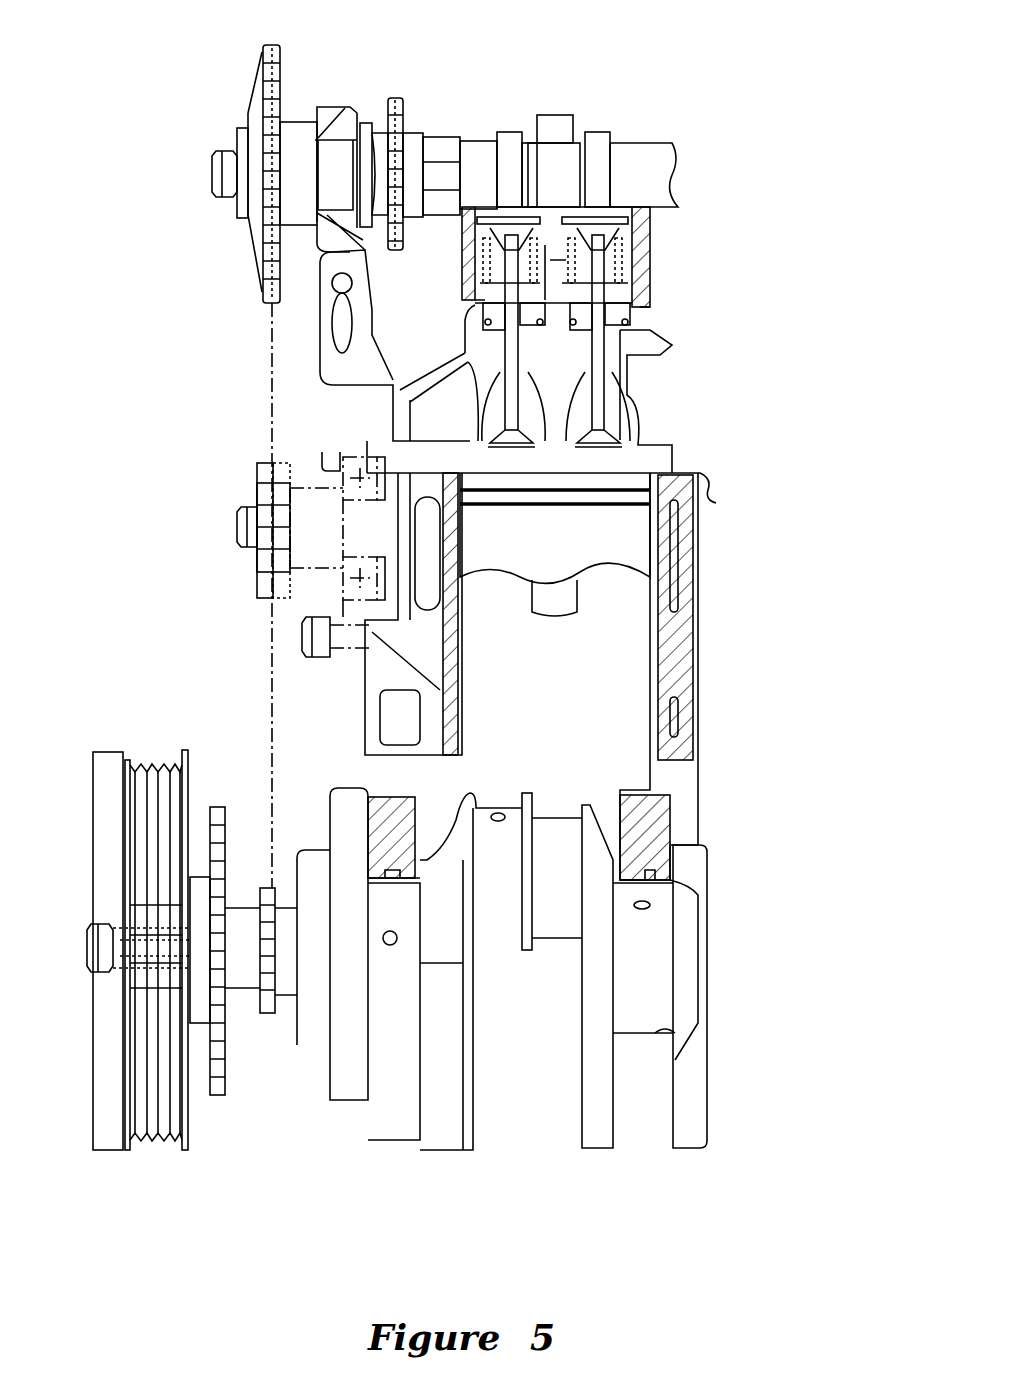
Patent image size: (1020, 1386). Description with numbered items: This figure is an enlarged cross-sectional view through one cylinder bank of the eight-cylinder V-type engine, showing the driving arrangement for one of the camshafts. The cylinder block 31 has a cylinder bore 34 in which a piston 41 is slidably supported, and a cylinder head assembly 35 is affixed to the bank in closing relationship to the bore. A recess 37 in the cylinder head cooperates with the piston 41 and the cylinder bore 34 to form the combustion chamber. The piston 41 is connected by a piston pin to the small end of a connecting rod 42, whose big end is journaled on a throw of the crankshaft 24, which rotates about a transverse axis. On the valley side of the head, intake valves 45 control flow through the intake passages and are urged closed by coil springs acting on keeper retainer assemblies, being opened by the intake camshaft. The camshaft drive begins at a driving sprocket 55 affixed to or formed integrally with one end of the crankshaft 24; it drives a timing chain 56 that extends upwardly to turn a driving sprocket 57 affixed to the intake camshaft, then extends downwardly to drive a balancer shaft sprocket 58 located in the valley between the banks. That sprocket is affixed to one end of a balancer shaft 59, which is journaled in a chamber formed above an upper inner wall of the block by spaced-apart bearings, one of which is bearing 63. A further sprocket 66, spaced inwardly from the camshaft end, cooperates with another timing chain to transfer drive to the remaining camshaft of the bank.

The crankshaft 24 is at (560, 1004).
The cylinder block 31 is at (710, 618).
The cylinder bore 34 is at (660, 684).
The cylinder head assembly 35 is at (648, 408).
The cylinder head recess 37 is at (542, 463).
The piston 41 is at (630, 538).
The connecting rod 42 is at (625, 143).
The intake valve 45 is at (622, 396).
The driving sprocket 55 is at (267, 1013).
The timing chain 56 is at (270, 645).
The driving sprocket 57 is at (262, 52).
The balancer shaft sprocket 58 is at (243, 497).
The balancer shaft 59 is at (300, 483).
The bearing 63 is at (350, 457).
The further sprocket 66 is at (391, 98).